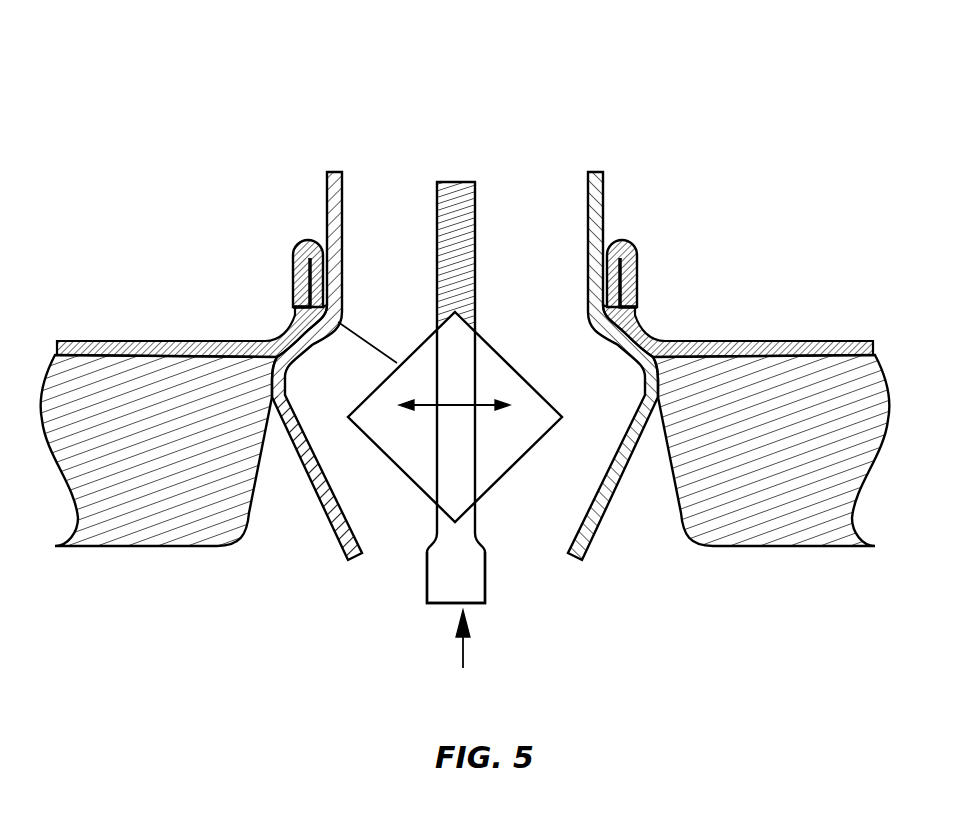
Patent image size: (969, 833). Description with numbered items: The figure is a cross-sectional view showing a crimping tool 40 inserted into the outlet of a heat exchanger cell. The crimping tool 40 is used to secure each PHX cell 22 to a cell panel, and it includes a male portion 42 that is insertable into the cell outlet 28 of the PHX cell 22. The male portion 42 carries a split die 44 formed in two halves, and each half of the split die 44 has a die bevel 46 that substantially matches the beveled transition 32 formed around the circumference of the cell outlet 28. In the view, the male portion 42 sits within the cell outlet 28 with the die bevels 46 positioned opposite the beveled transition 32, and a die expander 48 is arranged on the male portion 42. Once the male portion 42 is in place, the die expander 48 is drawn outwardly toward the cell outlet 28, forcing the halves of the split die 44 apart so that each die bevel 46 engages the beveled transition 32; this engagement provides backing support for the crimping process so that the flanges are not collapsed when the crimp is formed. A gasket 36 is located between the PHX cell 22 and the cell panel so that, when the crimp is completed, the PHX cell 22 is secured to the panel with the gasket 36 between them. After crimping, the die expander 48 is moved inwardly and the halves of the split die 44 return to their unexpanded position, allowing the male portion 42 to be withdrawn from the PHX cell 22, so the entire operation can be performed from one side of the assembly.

The crimping tool 40 is at (365, 140).
The PHX cell 22 is at (300, 467).
The cell outlet 28 is at (555, 267).
The beveled transition 32 is at (287, 337).
The gasket 36 is at (728, 512).
The male portion 42 is at (448, 358).
The split die 44 is at (437, 452).
The die bevel 46 is at (293, 300).
The die expander 48 is at (450, 580).